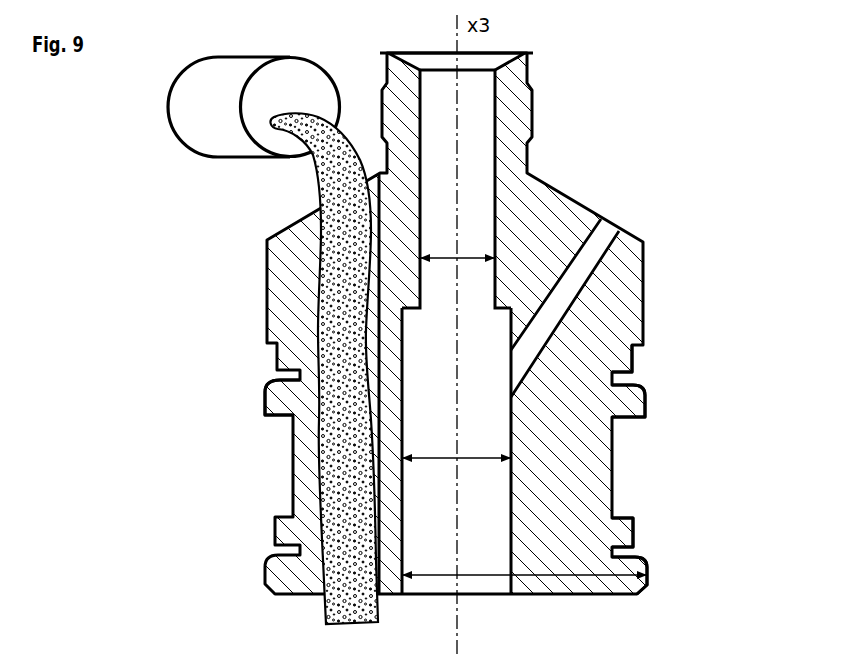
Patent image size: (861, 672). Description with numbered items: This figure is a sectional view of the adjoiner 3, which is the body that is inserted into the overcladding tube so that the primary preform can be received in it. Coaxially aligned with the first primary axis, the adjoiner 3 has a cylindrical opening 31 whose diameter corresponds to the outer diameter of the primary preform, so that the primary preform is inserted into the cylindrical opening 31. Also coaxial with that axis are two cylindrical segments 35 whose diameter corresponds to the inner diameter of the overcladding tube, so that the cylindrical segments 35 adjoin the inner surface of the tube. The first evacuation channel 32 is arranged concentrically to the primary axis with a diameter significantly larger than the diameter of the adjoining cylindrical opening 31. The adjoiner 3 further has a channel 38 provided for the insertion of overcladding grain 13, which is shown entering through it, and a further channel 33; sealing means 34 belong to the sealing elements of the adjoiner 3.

The adjoiner 3 is at (655, 148).
The overcladding grain 13 is at (305, 170).
The cylindrical opening 31 is at (473, 138).
The first evacuation channel 32 is at (503, 427).
The channel 33 is at (557, 330).
The sealing means 34 is at (633, 381).
The cylindrical segments 35 is at (655, 562).
The channel 38 is at (290, 414).